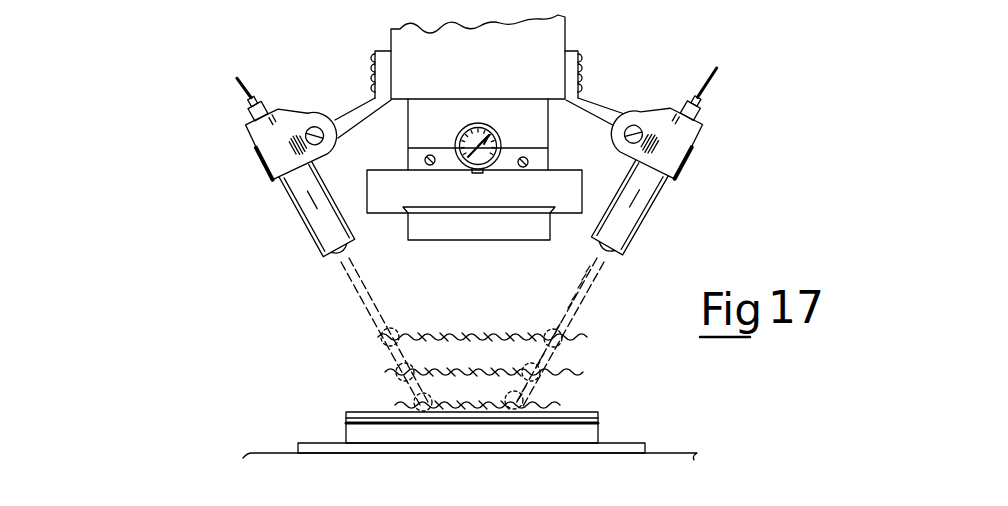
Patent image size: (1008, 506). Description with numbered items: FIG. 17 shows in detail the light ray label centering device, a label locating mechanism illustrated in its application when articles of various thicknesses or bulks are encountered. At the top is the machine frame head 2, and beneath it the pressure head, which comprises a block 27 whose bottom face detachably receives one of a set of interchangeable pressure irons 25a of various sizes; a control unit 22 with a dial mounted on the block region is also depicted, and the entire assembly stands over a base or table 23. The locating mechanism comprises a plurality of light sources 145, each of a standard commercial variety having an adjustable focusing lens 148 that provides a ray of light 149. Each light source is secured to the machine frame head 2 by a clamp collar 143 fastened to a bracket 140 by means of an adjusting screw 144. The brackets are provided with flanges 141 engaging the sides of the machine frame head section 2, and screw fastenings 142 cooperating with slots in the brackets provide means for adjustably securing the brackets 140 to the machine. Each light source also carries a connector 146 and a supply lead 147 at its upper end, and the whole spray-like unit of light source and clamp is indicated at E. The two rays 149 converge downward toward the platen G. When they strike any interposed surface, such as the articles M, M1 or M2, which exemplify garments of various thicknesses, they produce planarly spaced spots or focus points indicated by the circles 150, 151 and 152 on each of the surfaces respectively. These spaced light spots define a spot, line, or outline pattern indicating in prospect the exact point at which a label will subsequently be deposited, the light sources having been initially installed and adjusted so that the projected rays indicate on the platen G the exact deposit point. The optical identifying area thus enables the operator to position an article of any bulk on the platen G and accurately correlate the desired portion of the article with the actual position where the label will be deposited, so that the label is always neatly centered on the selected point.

The machine frame head 2 is at (501, 61).
The control unit with gauge 22 is at (540, 156).
The table/base 23 is at (679, 453).
The pressure iron 25a is at (517, 238).
The block 27 is at (555, 170).
The bracket 140 is at (592, 99).
The flange 141 is at (570, 51).
The screw fastening 142 is at (582, 63).
The clamp collar 143 is at (256, 151).
The adjusting screw 144 is at (330, 137).
The light source 145 is at (648, 213).
The connector 146 is at (696, 104).
The supply lead 147 is at (714, 75).
The adjustable focusing lens 148 is at (353, 244).
The ray of light 149 is at (358, 292).
The circle (light spot) on surface M 150 is at (394, 326).
The circle (light spot) on surface M1 151 is at (415, 361).
The circle (light spot) on surface M2 152 is at (433, 397).
The spray unit E is at (240, 120).
The article M is at (590, 337).
The article M1 is at (585, 372).
The article M2 is at (567, 405).
The platen G is at (602, 427).